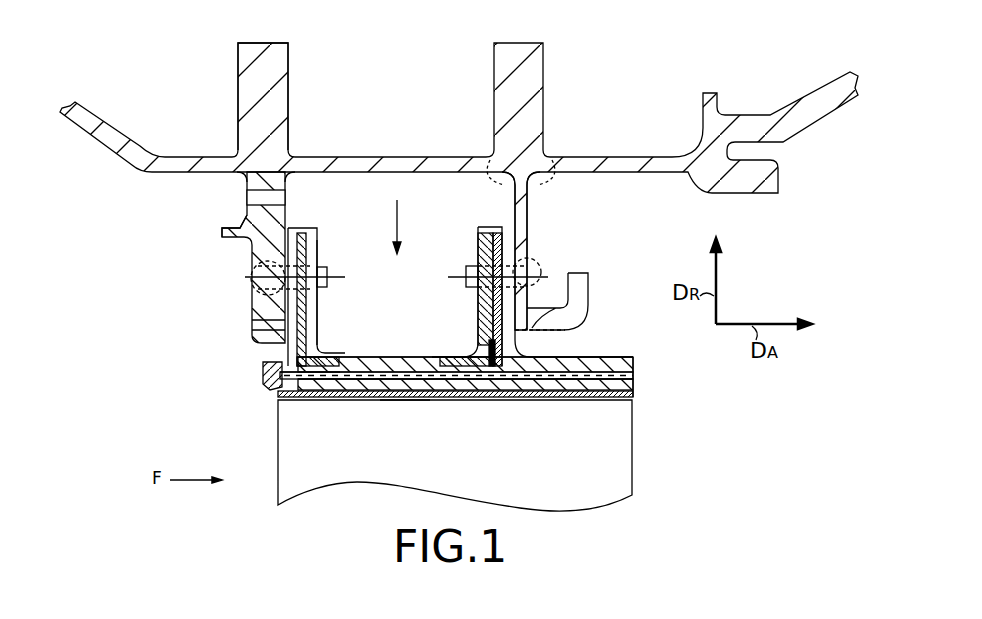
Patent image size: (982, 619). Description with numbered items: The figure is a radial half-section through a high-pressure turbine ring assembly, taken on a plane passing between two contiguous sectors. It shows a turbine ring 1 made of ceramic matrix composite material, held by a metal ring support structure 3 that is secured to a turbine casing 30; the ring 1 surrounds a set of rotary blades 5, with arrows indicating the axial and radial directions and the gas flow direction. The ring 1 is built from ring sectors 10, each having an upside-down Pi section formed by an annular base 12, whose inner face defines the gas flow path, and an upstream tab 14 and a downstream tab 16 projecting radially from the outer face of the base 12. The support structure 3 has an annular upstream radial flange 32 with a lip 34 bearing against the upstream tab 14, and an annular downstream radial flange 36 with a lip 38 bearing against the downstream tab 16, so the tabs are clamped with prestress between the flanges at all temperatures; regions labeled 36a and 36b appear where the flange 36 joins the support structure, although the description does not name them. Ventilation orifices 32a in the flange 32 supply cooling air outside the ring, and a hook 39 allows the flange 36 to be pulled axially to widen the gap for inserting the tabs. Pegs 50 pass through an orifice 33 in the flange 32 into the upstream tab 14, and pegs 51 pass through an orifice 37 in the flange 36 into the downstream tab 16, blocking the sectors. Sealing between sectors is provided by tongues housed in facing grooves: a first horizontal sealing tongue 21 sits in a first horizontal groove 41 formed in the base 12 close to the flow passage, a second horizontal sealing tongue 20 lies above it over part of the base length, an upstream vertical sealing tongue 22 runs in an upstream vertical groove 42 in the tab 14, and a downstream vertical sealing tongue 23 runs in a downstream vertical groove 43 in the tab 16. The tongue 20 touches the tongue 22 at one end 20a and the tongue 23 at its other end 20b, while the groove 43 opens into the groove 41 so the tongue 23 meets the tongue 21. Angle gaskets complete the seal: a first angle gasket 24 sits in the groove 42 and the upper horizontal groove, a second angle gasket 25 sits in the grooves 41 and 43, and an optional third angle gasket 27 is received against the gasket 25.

The turbine ring 1 is at (397, 216).
The ring support structure 3 is at (380, 60).
The rotary blades 5 is at (430, 449).
The ring sector 10 is at (352, 357).
The annular base 12 is at (406, 402).
The upstream tab 14 is at (311, 228).
The downstream tab 16 is at (480, 228).
The second horizontal sealing tongue 20 is at (401, 357).
The end of second horizontal sealing tongue 20a is at (332, 377).
The other end of second horizontal sealing tongue 20b is at (460, 358).
The first horizontal sealing tongue 21 is at (633, 380).
The upstream vertical sealing tongue 22 is at (322, 313).
The downstream vertical sealing tongue 23 is at (521, 386).
The first angle gasket 24 is at (290, 378).
The second angle gasket 25 is at (480, 386).
The third angle gasket 27 is at (490, 345).
The turbine casing 30 is at (279, 85).
The annular upstream radial flange 32 is at (225, 232).
The ventilation orifices 32a is at (252, 193).
The orifice in upstream flange 33 is at (262, 307).
The lip of upstream flange 34 is at (262, 385).
The annular downstream radial flange 36 is at (528, 235).
The downstream fillet 36a is at (545, 162).
The upstream fillet 36b is at (497, 162).
The orifice in downstream flange 37 is at (537, 257).
The lip of downstream flange 38 is at (528, 318).
The hook 39 is at (585, 300).
The first horizontal groove 41 is at (584, 393).
The upstream vertical groove 42 is at (282, 322).
The downstream vertical groove 43 is at (514, 345).
The upstream peg 50 is at (330, 273).
The downstream peg 51 is at (470, 268).